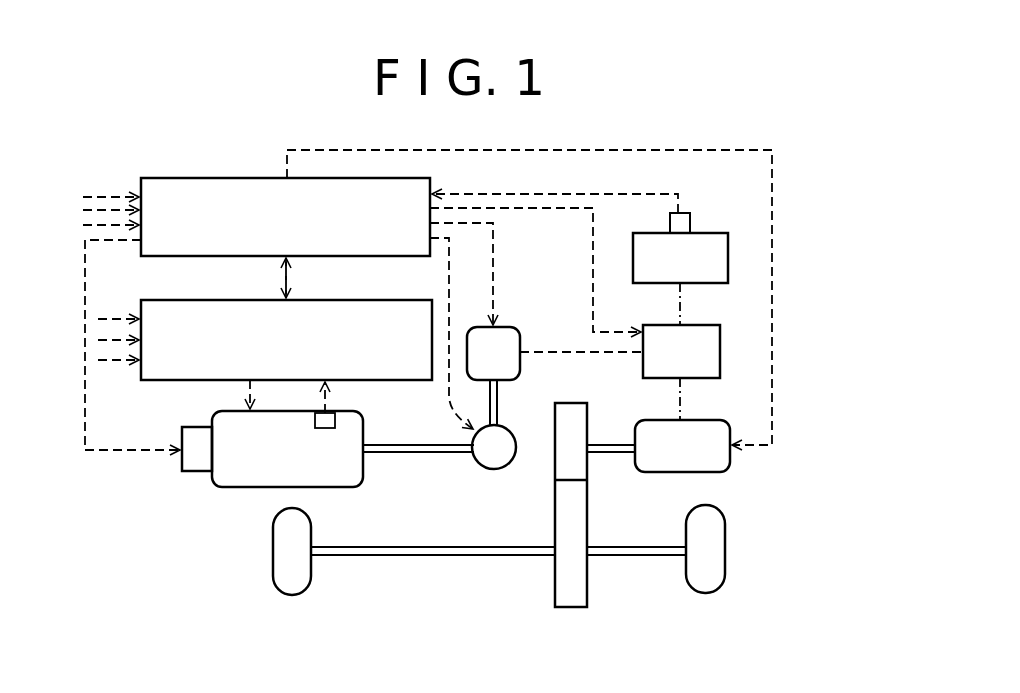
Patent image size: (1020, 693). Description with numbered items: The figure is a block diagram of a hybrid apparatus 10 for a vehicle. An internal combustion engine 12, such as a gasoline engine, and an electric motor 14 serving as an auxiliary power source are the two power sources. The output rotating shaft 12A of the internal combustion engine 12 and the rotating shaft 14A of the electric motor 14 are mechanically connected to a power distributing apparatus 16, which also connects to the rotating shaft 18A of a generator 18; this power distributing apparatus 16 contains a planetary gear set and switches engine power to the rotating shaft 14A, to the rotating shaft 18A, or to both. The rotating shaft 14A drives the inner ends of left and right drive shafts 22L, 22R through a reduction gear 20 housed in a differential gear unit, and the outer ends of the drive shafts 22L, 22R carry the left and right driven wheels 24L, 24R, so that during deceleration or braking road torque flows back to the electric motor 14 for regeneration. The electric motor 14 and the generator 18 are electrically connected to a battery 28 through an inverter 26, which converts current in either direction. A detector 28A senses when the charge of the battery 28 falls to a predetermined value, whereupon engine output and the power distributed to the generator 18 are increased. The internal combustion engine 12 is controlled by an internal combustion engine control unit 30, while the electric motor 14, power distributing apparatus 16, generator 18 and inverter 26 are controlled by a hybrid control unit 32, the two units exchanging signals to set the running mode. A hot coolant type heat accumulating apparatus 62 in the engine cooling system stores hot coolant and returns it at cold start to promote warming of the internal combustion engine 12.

The hybrid apparatus 10 is at (490, 566).
The internal combustion engine 12 is at (343, 478).
The output rotating shaft 12A is at (428, 455).
The electric motor 14 is at (720, 460).
The rotating shaft 14A is at (608, 443).
The power distributing apparatus 16 is at (494, 457).
The generator 18 is at (500, 335).
The rotating shaft 18A is at (500, 405).
The reduction gear 20 is at (598, 506).
The left drive shaft 22L is at (352, 558).
The right drive shaft 22R is at (640, 558).
The left driven wheel 24L is at (282, 550).
The right driven wheel 24R is at (715, 545).
The inverter 26 is at (705, 352).
The battery 28 is at (718, 243).
The charge detector 28A is at (683, 222).
The internal combustion engine control unit 30 is at (302, 375).
The hybrid control unit 32 is at (300, 253).
The hot coolant type heat accumulating apparatus 62 is at (195, 457).